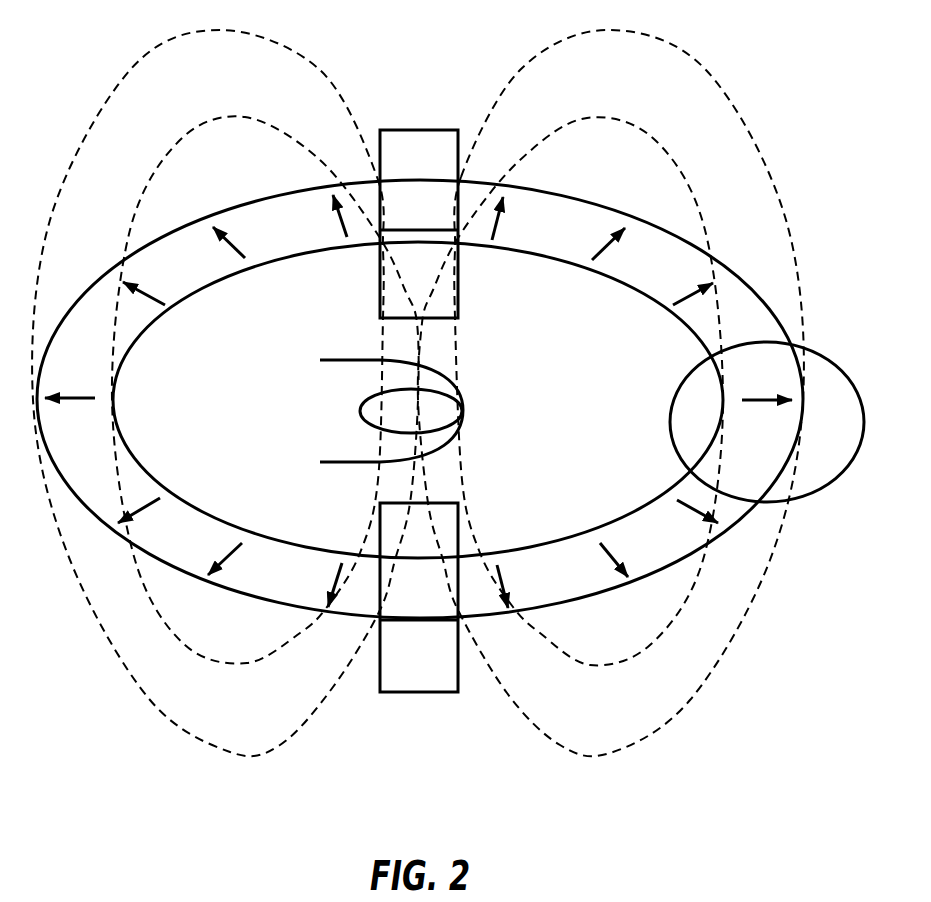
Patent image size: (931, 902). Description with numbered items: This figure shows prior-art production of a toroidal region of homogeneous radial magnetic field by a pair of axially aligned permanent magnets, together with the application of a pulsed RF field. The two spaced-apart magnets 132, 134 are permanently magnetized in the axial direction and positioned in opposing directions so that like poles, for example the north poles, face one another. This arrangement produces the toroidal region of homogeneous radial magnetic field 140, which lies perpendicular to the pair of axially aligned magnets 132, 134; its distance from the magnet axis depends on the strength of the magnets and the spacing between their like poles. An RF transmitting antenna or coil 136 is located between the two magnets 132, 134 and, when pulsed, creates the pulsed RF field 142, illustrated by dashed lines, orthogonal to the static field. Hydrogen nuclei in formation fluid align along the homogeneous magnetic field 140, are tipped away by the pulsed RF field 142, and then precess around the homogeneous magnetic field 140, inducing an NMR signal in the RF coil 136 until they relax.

The magnet 132 is at (422, 130).
The magnet 134 is at (415, 693).
The RF coil 136 is at (463, 423).
The toroidal region of homogeneous radial magnetic field 140 is at (743, 520).
The pulsed RF field 142 is at (688, 723).